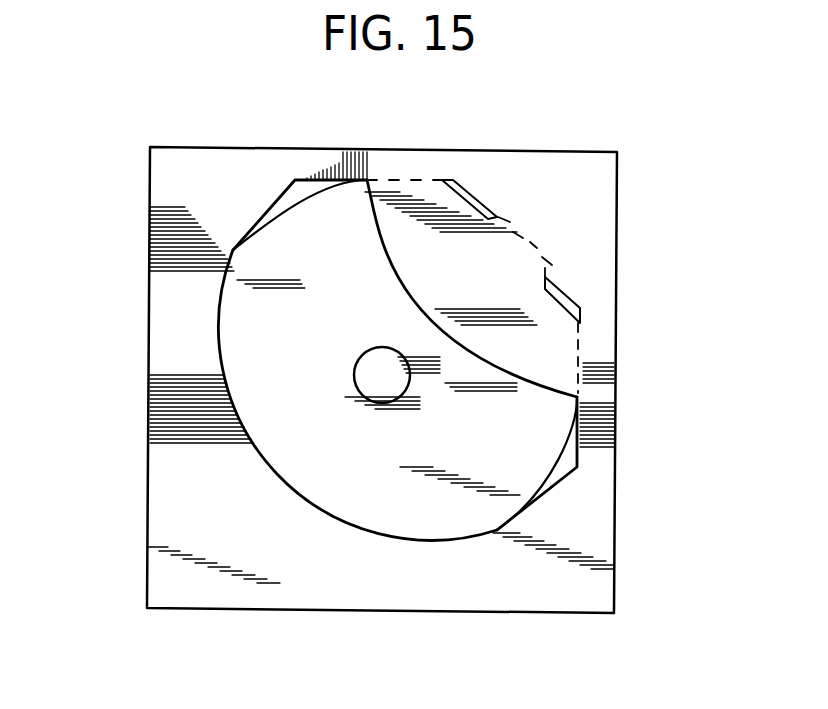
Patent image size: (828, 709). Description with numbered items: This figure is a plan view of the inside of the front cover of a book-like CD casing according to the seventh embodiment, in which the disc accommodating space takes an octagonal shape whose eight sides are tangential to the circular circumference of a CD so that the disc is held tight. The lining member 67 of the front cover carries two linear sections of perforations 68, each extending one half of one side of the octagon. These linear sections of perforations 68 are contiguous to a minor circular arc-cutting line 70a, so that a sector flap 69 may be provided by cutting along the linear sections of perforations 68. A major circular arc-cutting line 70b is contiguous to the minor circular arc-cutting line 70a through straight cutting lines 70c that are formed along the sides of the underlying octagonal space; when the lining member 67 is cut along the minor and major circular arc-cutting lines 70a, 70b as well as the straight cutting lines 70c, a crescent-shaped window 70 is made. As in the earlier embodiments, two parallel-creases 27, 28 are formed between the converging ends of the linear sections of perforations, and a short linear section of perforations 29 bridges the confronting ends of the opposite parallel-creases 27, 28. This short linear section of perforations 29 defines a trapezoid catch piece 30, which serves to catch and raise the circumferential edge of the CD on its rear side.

The parallel-crease 27 is at (558, 306).
The parallel-crease 28 is at (472, 200).
The short linear section of perforations 29 is at (552, 265).
The trapezoid catch piece 30 is at (517, 243).
The lining member 67 is at (605, 545).
The linear section of perforations 68 is at (405, 180).
The sector flap 69 is at (483, 332).
The crescent-shaped window 70 is at (337, 462).
The minor circular arc-cutting line 70a is at (388, 265).
The major circular arc-cutting line 70b is at (233, 390).
The straight cutting line 70c is at (332, 180).